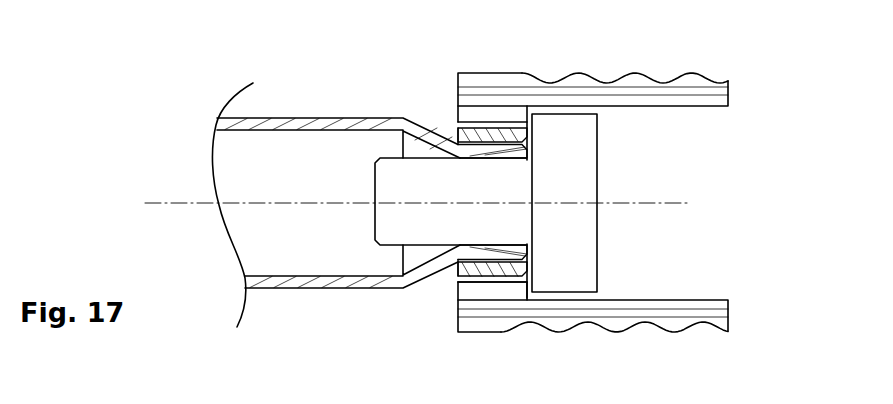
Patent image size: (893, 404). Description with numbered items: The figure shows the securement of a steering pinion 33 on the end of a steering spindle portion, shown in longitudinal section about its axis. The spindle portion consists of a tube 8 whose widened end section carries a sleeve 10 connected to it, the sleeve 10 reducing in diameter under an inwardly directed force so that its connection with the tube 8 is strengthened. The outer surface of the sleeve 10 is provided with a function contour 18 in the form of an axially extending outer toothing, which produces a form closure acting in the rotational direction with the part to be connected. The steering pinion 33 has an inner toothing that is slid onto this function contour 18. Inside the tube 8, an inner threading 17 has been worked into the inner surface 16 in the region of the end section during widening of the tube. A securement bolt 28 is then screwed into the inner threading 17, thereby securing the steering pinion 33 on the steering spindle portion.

The tube 8 is at (283, 120).
The sleeve 10 is at (482, 270).
The inner surface 16 is at (506, 165).
The inner threading 17 is at (458, 277).
The function contour 18 is at (508, 282).
The securement bolt 28 is at (580, 190).
The steering pinion 33 is at (590, 88).